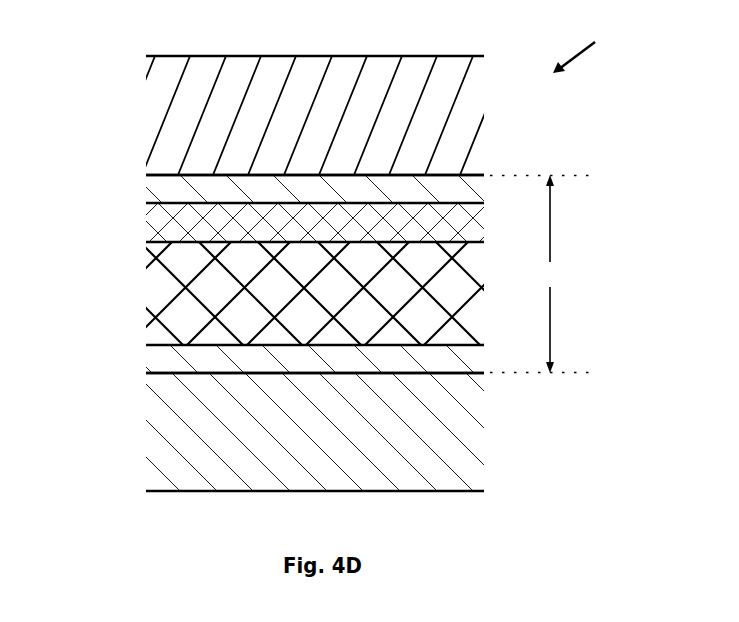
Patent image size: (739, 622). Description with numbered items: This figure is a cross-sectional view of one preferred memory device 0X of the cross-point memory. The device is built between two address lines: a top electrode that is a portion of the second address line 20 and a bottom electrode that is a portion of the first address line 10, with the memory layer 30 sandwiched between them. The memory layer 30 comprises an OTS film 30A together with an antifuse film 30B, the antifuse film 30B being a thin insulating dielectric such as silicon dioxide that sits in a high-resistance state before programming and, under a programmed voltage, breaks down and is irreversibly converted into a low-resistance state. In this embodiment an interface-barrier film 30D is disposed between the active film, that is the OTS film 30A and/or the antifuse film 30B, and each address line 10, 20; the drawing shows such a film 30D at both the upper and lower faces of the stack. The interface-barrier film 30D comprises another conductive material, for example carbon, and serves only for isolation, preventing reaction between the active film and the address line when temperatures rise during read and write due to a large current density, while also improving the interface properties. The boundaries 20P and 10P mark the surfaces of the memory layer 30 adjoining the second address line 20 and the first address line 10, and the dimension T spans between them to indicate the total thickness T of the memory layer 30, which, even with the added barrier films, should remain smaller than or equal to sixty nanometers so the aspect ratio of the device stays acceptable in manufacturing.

The second address line 20 is at (155, 110).
The memory layer 30 is at (299, 277).
The interface-barrier film 30D is at (155, 190).
The antifuse film 30B is at (155, 220).
The OTS film 30A is at (328, 293).
The first address line 10 is at (155, 438).
The interface plane with layer 20 20P is at (570, 172).
The interface plane with layer 10 10P is at (571, 378).
The total thickness of the memory layer T is at (550, 274).
The memory device 0X is at (591, 51).